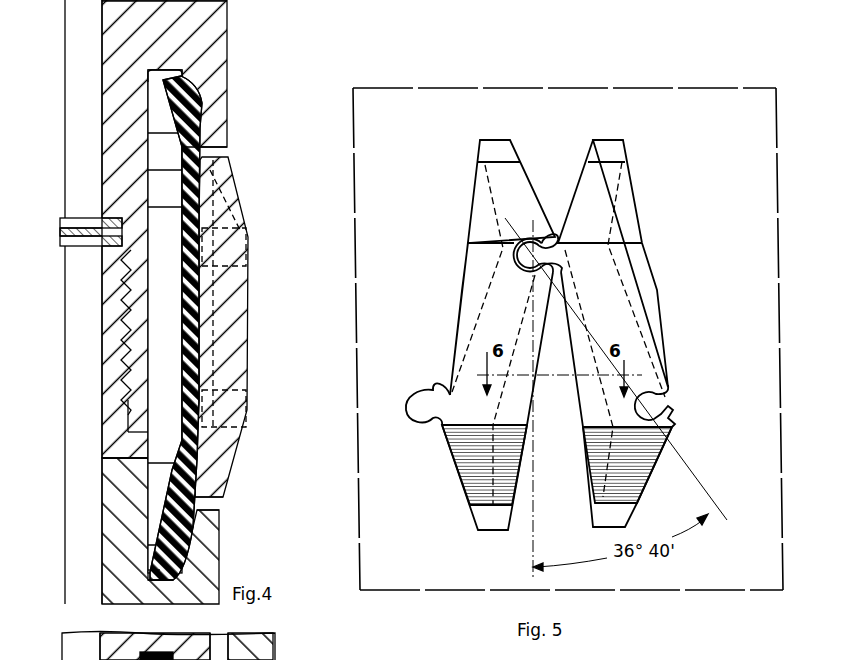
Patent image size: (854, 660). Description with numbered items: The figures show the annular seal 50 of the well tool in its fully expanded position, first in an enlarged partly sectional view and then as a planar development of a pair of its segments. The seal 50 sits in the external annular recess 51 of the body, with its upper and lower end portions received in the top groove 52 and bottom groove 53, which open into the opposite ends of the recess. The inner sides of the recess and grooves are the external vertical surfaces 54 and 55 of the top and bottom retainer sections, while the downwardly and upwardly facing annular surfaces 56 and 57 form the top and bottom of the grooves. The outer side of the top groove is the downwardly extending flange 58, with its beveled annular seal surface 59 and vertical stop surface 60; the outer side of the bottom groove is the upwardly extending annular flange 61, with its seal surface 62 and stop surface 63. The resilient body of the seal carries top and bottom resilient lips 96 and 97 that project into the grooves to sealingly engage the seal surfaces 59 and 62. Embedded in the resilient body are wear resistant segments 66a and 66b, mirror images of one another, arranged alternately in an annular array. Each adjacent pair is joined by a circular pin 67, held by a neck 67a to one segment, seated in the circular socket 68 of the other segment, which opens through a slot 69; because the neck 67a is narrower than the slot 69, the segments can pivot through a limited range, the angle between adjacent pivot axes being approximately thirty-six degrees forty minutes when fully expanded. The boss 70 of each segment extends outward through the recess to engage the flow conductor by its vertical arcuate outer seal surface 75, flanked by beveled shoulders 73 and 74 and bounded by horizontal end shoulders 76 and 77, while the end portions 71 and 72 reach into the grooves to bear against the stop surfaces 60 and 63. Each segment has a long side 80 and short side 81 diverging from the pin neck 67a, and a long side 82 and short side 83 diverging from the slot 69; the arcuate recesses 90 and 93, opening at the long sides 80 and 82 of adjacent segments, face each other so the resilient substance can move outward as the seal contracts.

In FIG. 4, the annular seal 50 is at (258, 264).
In FIG. 4, the external annular recess 51 is at (226, 153).
In FIG. 4, the top groove 52 is at (152, 98).
In FIG. 4, the bottom groove 53 is at (144, 507).
In FIG. 4, the external vertical surface 54 is at (150, 305).
In FIG. 4, the external vertical surface 55 is at (150, 430).
In FIG. 4, the downwardly facing annular surface 56 is at (150, 80).
In FIG. 4, the upwardly facing annular surface 57 is at (148, 570).
In FIG. 4, the downwardly extending flange 58 is at (222, 128).
In FIG. 4, the beveled annular seal surface 59 is at (197, 82).
In FIG. 4, the stop surface 60 is at (203, 113).
In FIG. 4, the upwardly extending annular flange 61 is at (207, 528).
In FIG. 4, the annular seal surface 62 is at (183, 557).
In FIG. 4, the stop surface 63 is at (197, 540).
In FIG. 4, the segment 66a is at (253, 297).
In FIG. 5, the segment 66a is at (455, 481).
In FIG. 5, the segment 66b is at (668, 390).
In FIG. 5, the pin 67 is at (433, 390).
In FIG. 5, the neck 67a is at (442, 424).
In FIG. 5, the circular socket 68 is at (548, 237).
In FIG. 5, the slot 69 is at (562, 243).
In FIG. 4, the boss 70 is at (235, 337).
In FIG. 5, the boss 70 is at (655, 293).
In FIG. 5, the end portion 71 is at (498, 145).
In FIG. 5, the end portion 72 is at (605, 162).
In FIG. 4, the beveled shoulder 73 is at (213, 213).
In FIG. 5, the beveled shoulder 73 is at (514, 170).
In FIG. 4, the beveled shoulder 74 is at (230, 467).
In FIG. 5, the beveled shoulder 74 is at (623, 200).
In FIG. 4, the outer seal surface 75 is at (247, 363).
In FIG. 5, the outer seal surface 75 is at (632, 267).
In FIG. 4, the end shoulder 76 is at (250, 135).
In FIG. 5, the end shoulder 76 is at (480, 157).
In FIG. 4, the end shoulder 77 is at (218, 506).
In FIG. 5, the end shoulder 77 is at (623, 142).
In FIG. 5, the long longitudinal side 80 is at (462, 287).
In FIG. 5, the short longitudinal side 81 is at (582, 177).
In FIG. 5, the long longitudinal side 82 is at (513, 483).
In FIG. 5, the short longitudinal side 83 is at (513, 172).
In FIG. 5, the arcuate recess 90 is at (500, 265).
In FIG. 5, the arcuate recess 93 is at (510, 372).
In FIG. 4, the top resilient lip 96 is at (160, 115).
In FIG. 4, the bottom resilient lip 97 is at (167, 543).